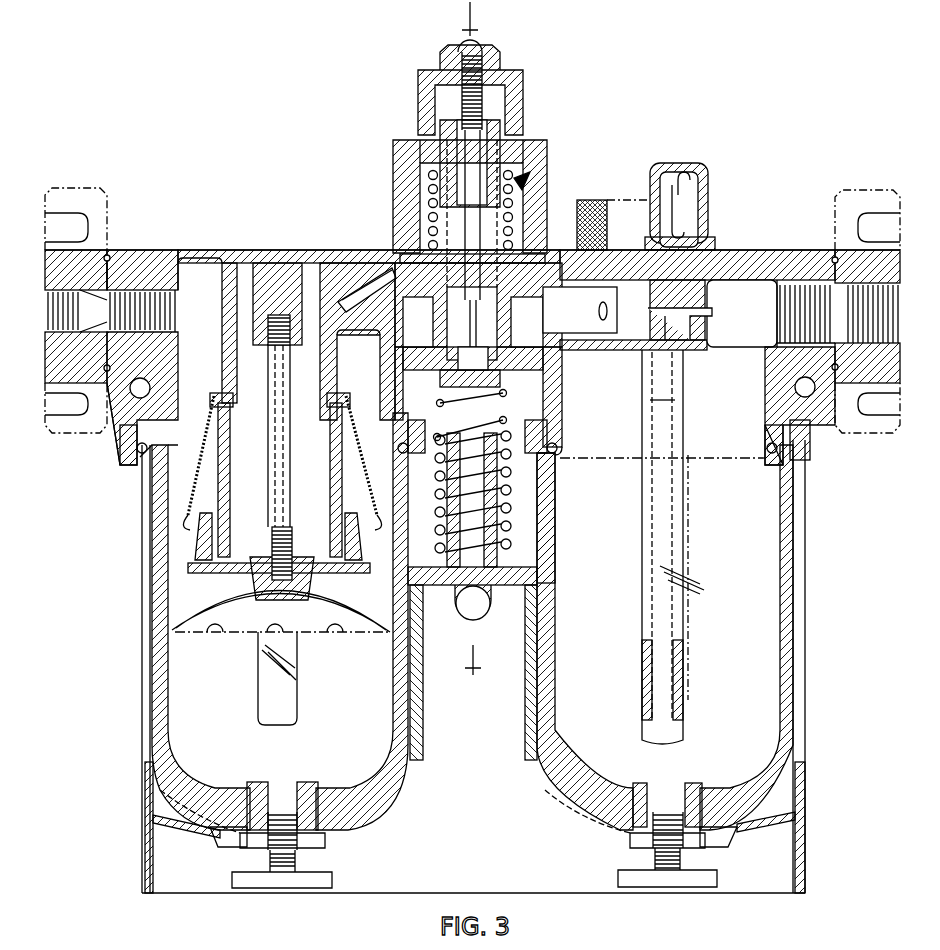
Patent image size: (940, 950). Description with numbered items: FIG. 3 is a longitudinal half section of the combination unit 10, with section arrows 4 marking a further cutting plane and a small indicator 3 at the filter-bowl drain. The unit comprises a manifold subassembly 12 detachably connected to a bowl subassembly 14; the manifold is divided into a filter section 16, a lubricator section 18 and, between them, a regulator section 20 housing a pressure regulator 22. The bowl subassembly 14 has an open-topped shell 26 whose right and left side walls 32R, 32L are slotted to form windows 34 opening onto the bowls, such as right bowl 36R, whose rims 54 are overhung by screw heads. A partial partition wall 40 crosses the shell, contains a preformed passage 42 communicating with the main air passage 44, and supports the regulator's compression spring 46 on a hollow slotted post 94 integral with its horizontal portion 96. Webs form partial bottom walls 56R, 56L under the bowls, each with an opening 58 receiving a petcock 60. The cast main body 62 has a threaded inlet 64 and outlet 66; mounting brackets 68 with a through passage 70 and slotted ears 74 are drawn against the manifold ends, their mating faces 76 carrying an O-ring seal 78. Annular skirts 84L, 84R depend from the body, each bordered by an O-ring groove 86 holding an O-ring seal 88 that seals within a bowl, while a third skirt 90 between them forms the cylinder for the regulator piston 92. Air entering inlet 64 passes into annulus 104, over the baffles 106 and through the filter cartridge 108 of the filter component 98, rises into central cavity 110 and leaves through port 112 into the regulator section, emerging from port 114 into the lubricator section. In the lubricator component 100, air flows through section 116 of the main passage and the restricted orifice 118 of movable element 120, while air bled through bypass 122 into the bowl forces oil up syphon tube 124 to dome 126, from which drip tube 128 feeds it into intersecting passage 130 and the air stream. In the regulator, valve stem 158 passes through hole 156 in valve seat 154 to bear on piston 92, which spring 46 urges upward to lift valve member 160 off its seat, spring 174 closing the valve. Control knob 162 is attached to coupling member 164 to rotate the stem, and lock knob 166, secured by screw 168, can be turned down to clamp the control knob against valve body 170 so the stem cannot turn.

The water level indicator 3 is at (296, 700).
The section line 4 is at (458, 18).
The combination unit 10 is at (318, 185).
The manifold subassembly 12 is at (165, 270).
The bowl subassembly 14 is at (145, 780).
The filter section 16 is at (180, 592).
The lubricator section 18 is at (760, 582).
The regulator section 20 is at (410, 278).
The pressure regulator 22 is at (530, 175).
The shell 26 is at (805, 496).
The left side wall 32L is at (178, 716).
The right side wall 32R is at (798, 792).
The windows 34 is at (150, 668).
The right bowl 36R is at (548, 702).
The partial partition wall 40 is at (530, 725).
The passage 42 is at (470, 606).
The main air passage 44 is at (352, 278).
The compression spring 46 is at (540, 506).
The rims 54 is at (170, 420).
The left partial bottom wall 56L is at (370, 800).
The right partial bottom wall 56R is at (575, 812).
The opening 58 is at (345, 845).
The petcock 60 is at (280, 880).
The main body 62 is at (128, 262).
The inlet 64 is at (185, 290).
The outlet 66 is at (800, 278).
The mounting bracket 68 is at (78, 196).
The passage 70 is at (60, 315).
The slotted ears 74 is at (60, 424).
The faces 76 is at (105, 282).
The O-ring seal 78 is at (100, 370).
The left annular skirt 84L is at (358, 357).
The right annular skirt 84R is at (565, 385).
The O-ring groove 86 is at (136, 455).
The O-ring seal 88 is at (130, 450).
The third skirt 90 is at (527, 407).
The piston 92 is at (450, 348).
The post 94 is at (512, 530).
The horizontal portion 96 is at (525, 560).
The filter component 98 is at (320, 640).
The lubricator component 100 is at (718, 428).
The annulus 104 is at (200, 270).
The baffles 106 is at (182, 520).
The filter cartridge 108 is at (230, 470).
The central cavity 110 is at (264, 421).
The port 112 is at (380, 305).
The port 114 is at (540, 290).
The section of main air passage 116 is at (607, 308).
The restricted orifice 118 is at (655, 305).
The movable element 120 is at (700, 322).
The bypass 122 is at (597, 317).
The syphon tube 124 is at (665, 627).
The dome 126 is at (676, 165).
The drip tube 128 is at (690, 180).
The intersecting passage 130 is at (712, 237).
The valve seat 154 is at (505, 262).
The hole 156 is at (453, 405).
The valve stem 158 is at (403, 296).
The valve member 160 is at (518, 138).
The control knob 162 is at (520, 82).
The coupling member 164 is at (522, 108).
The lock knob 166 is at (442, 56).
The screw 168 is at (490, 45).
The valve body 170 is at (402, 145).
The spring 174 is at (430, 178).